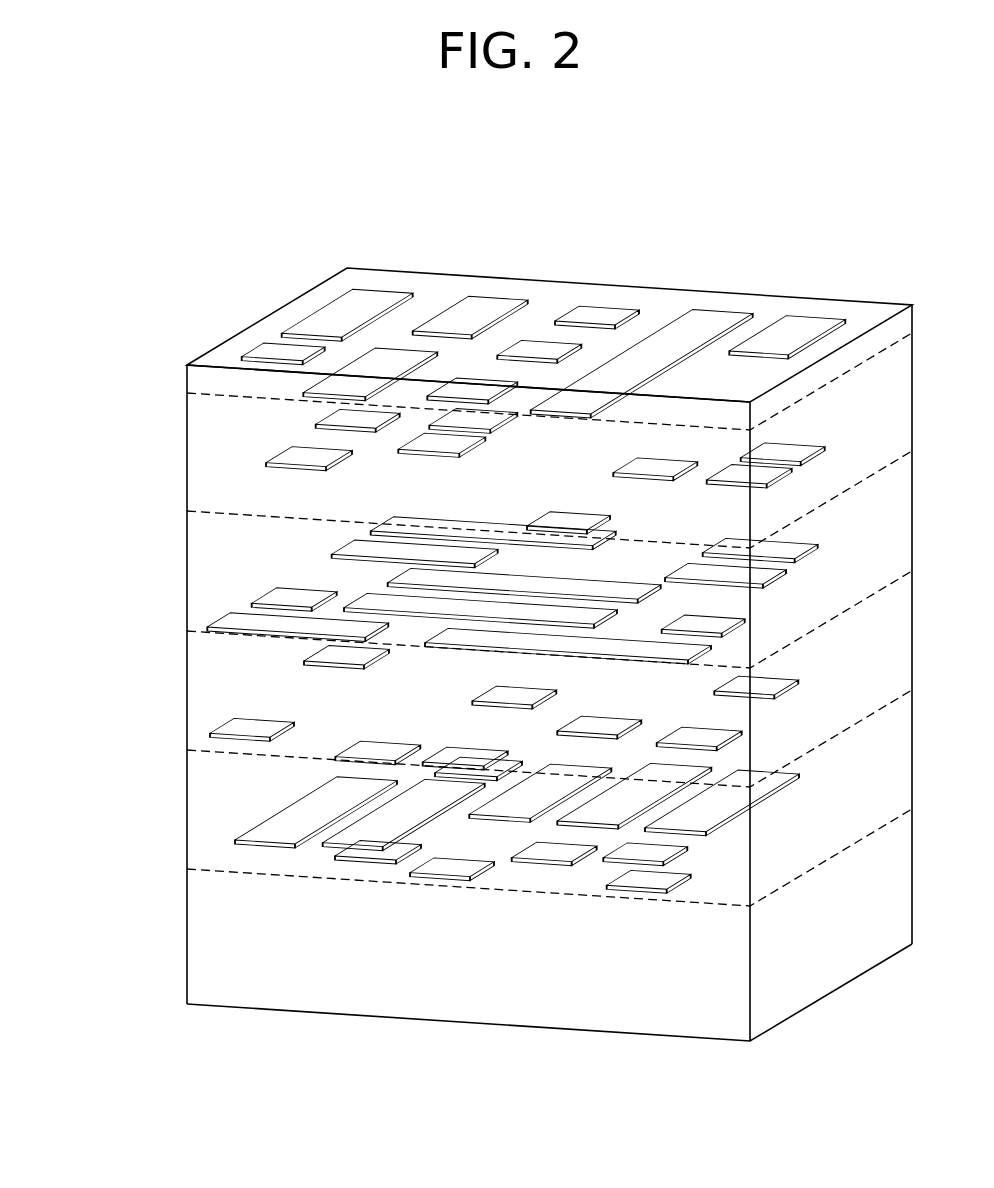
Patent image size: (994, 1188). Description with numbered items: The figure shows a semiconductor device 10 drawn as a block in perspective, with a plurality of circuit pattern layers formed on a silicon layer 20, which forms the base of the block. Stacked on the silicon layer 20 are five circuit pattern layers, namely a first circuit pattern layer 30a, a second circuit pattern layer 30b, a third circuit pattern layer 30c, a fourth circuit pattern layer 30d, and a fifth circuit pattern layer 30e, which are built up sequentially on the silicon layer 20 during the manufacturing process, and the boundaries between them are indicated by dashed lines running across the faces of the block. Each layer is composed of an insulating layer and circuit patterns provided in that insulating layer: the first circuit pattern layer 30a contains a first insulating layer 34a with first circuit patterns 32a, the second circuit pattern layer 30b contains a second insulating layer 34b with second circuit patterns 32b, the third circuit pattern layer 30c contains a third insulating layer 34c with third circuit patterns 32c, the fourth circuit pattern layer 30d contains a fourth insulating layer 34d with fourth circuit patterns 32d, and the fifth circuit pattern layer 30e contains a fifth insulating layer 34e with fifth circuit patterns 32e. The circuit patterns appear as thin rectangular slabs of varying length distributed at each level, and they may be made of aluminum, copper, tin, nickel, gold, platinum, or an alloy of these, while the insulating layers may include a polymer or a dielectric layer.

The semiconductor device 10 is at (233, 298).
The silicon layer 20 is at (193, 926).
The first circuit pattern layer 30a is at (93, 328).
The first circuit patterns 32a is at (263, 350).
The first insulating layer 34a is at (193, 377).
The second circuit pattern layer 30b is at (93, 436).
The second circuit patterns 32b is at (277, 459).
The second insulating layer 34b is at (193, 483).
The third circuit pattern layer 30c is at (93, 572).
The third circuit patterns 32c is at (277, 592).
The third insulating layer 34c is at (193, 607).
The fourth circuit pattern layer 30d is at (93, 645).
The fourth circuit patterns 32d is at (317, 657).
The fourth insulating layer 34d is at (193, 682).
The fifth circuit pattern layer 30e is at (93, 780).
The fifth circuit patterns 32e is at (317, 790).
The fifth insulating layer 34e is at (193, 813).